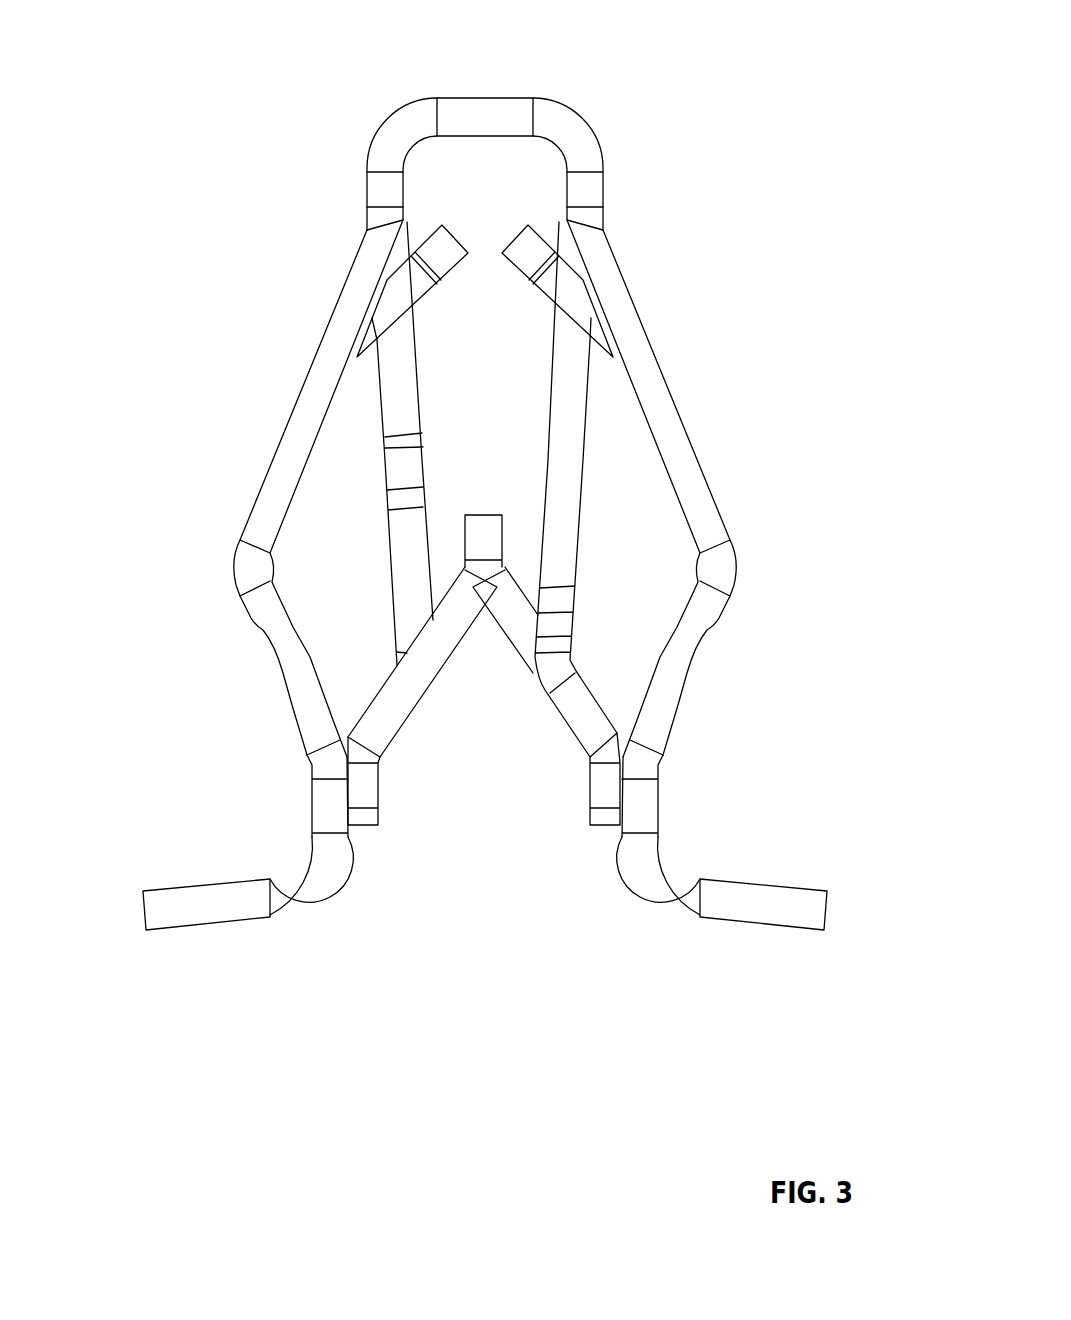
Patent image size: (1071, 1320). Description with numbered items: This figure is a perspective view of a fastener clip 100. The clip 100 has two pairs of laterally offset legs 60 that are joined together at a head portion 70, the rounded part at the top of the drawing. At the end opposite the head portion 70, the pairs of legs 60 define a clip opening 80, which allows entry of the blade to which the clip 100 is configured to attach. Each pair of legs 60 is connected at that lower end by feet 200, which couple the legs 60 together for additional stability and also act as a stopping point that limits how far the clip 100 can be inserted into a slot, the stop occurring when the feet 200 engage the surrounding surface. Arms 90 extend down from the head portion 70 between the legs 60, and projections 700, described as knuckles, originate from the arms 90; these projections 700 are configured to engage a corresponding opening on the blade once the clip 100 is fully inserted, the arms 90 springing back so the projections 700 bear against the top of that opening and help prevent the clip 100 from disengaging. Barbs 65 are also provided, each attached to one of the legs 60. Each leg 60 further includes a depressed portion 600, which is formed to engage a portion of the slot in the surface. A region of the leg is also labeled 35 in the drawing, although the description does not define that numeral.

The fastener clip 100 is at (756, 120).
The head portion 70 is at (572, 138).
The barbs 65 is at (437, 250).
The legs 60 is at (292, 463).
The depressed portion 600 is at (287, 682).
The projections 700 is at (490, 548).
The arms 90 is at (363, 784).
The lower leg portion 35 is at (750, 742).
The clip opening 80 is at (468, 883).
The feet 200 is at (212, 910).